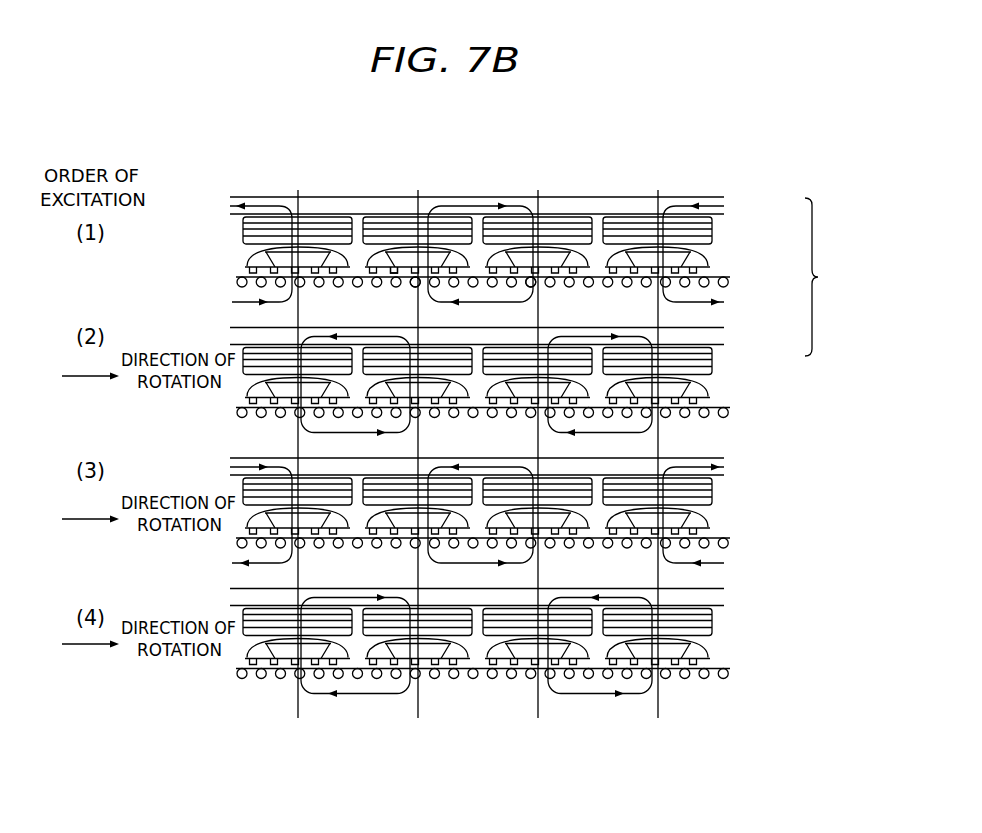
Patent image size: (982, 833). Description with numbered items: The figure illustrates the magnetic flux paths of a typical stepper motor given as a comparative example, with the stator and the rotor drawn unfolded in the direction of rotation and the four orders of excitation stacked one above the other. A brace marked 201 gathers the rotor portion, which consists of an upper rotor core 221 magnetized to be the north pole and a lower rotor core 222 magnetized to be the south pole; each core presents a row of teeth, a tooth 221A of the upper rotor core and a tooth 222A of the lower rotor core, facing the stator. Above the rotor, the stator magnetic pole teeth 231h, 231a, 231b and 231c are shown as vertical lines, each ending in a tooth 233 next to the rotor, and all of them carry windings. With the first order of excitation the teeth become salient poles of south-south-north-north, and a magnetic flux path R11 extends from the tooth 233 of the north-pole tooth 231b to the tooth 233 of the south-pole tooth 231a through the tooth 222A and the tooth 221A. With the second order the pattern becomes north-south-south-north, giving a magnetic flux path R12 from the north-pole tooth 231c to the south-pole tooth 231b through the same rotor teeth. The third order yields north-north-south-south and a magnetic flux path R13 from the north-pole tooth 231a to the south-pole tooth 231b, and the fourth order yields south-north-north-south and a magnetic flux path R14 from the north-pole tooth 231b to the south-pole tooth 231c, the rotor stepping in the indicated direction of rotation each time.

The motor 201 is at (829, 277).
The upper rotor core 221 is at (714, 286).
The lower rotor core 222 is at (726, 274).
The tooth of the upper rotor core 221A is at (424, 280).
The tooth of the lower rotor core 222A is at (535, 279).
The magnetic pole tooth 231h is at (307, 441).
The magnetic pole tooth 231a is at (426, 441).
The magnetic pole tooth 231b is at (540, 441).
The magnetic pole tooth 231c is at (663, 441).
The tooth 233 is at (402, 271).
The magnetic flux path R11 is at (470, 206).
The magnetic flux path R12 is at (586, 336).
The magnetic flux path R13 is at (470, 467).
The magnetic flux path R14 is at (586, 597).